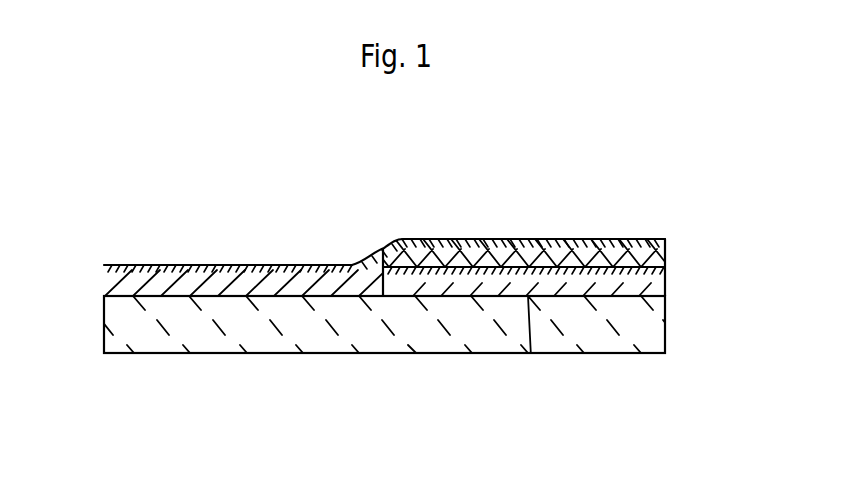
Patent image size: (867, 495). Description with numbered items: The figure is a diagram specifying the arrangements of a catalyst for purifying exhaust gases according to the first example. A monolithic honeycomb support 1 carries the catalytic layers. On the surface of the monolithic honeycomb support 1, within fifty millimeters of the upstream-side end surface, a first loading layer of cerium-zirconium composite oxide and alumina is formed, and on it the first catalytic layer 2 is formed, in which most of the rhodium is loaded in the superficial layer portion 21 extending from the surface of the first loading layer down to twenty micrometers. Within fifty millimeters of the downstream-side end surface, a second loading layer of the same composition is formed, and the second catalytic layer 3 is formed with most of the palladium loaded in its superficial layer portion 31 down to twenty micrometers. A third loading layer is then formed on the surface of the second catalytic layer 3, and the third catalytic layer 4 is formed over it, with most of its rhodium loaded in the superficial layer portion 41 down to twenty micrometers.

The monolithic honeycomb support 1 is at (483, 342).
The first catalytic layer 2 is at (185, 278).
The superficial layer portion 21 is at (253, 276).
The second catalytic layer 3 is at (634, 286).
The superficial layer portion 31 is at (551, 273).
The third catalytic layer 4 is at (640, 257).
The superficial layer portion 41 is at (456, 248).